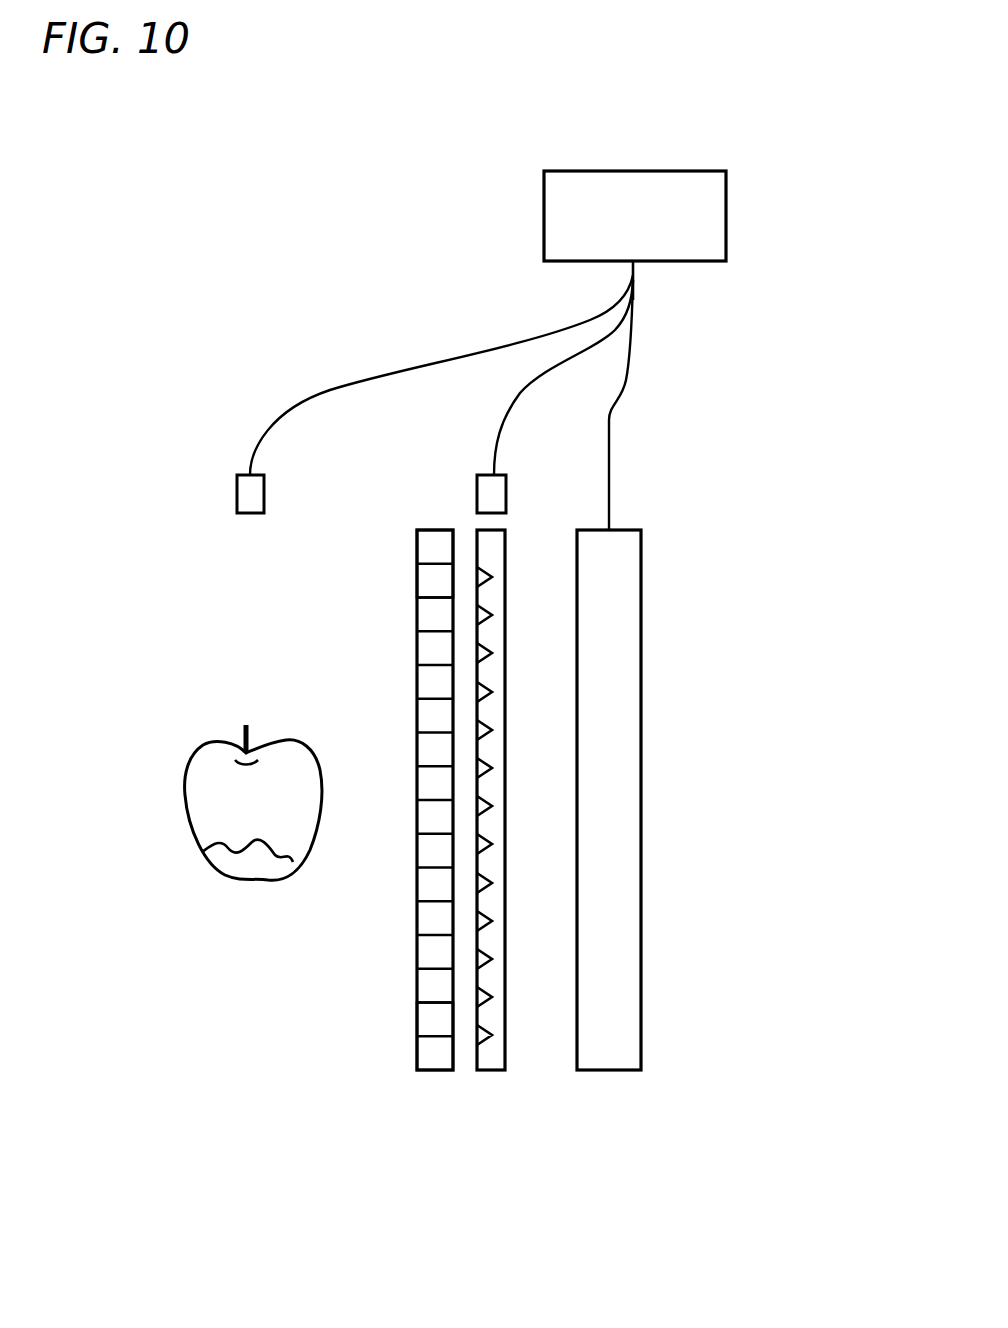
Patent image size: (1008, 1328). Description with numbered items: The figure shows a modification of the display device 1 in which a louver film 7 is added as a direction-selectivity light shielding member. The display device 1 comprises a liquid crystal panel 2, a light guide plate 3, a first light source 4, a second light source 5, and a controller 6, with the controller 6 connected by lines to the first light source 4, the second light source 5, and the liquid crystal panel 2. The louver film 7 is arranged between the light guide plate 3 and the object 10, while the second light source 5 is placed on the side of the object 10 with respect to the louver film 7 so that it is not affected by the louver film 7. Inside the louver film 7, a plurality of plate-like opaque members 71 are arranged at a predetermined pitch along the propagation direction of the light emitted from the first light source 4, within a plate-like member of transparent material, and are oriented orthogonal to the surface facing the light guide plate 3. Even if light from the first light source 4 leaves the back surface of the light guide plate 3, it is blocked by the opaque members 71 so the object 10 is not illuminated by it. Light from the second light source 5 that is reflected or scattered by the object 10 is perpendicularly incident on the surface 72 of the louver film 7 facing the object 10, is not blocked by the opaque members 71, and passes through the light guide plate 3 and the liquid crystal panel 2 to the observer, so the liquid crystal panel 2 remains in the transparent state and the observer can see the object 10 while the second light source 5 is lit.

The display device 1 is at (732, 1113).
The liquid crystal panel 2 is at (606, 1070).
The light guide plate 3 is at (490, 1070).
The first light source 4 is at (506, 490).
The second light source 5 is at (264, 484).
The controller 6 is at (726, 215).
The louver film 7 is at (432, 1070).
The object 10 is at (275, 880).
The opaque members 71 is at (437, 564).
The surface 72 is at (415, 1015).